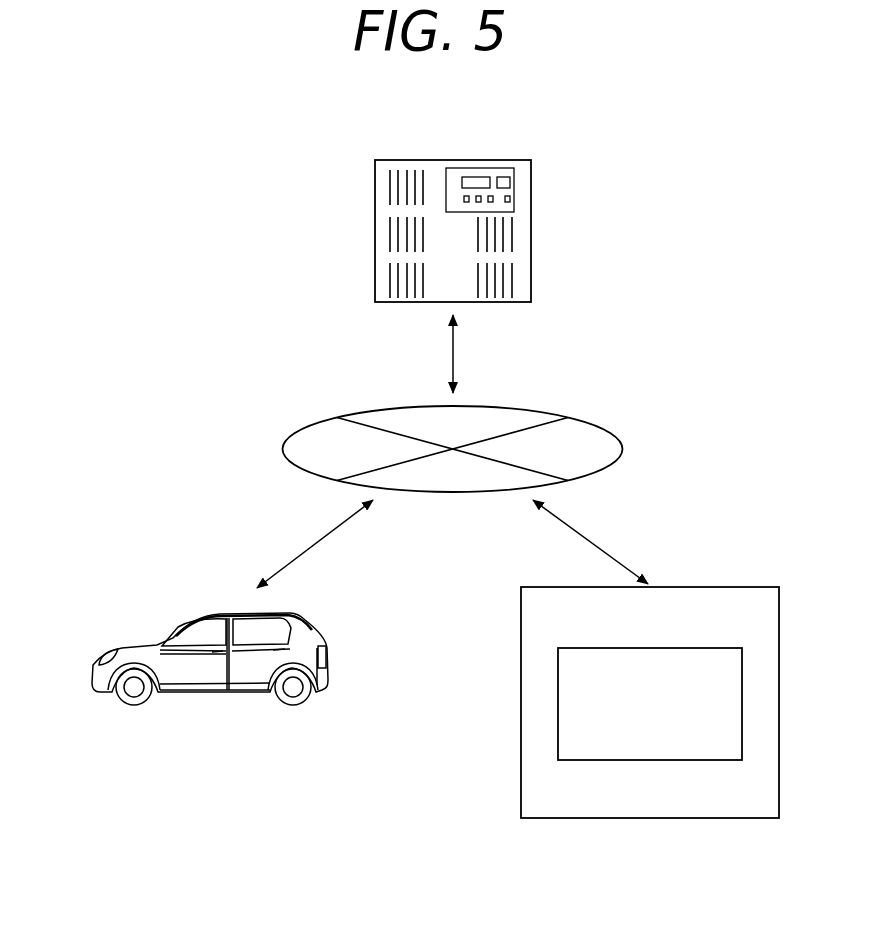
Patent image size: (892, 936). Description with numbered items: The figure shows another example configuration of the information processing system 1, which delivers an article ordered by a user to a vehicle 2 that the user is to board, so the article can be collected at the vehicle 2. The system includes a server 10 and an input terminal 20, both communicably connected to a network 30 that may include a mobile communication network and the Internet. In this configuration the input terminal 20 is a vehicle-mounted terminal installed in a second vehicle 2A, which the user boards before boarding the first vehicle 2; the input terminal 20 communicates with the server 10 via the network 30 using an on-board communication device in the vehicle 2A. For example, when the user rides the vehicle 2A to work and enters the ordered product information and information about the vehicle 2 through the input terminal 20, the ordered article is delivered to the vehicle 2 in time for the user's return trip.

The information processing system 1 is at (730, 307).
The server 10 is at (450, 160).
The network 30 is at (312, 423).
The vehicle 2 is at (217, 697).
The vehicle 2A is at (648, 818).
The input terminal 20 is at (650, 648).